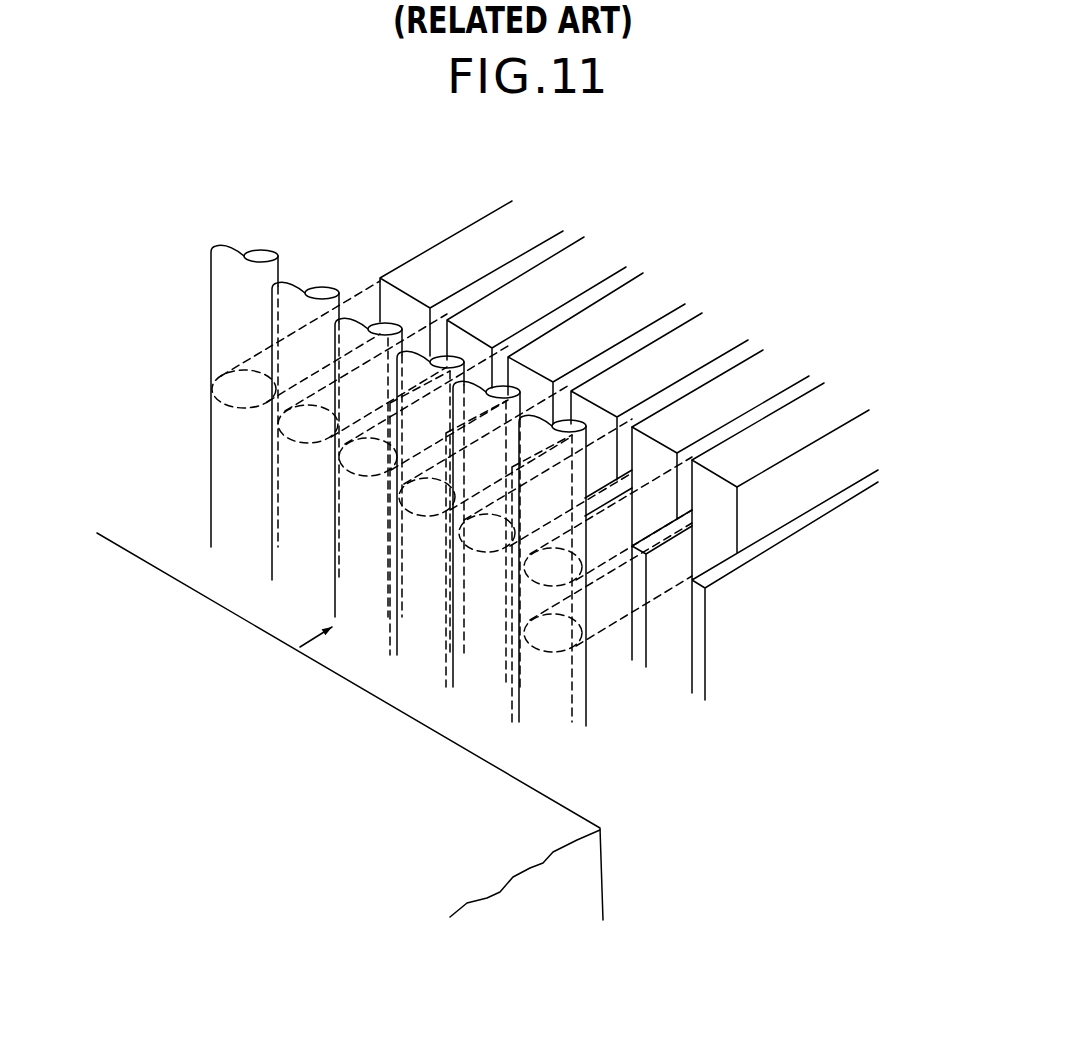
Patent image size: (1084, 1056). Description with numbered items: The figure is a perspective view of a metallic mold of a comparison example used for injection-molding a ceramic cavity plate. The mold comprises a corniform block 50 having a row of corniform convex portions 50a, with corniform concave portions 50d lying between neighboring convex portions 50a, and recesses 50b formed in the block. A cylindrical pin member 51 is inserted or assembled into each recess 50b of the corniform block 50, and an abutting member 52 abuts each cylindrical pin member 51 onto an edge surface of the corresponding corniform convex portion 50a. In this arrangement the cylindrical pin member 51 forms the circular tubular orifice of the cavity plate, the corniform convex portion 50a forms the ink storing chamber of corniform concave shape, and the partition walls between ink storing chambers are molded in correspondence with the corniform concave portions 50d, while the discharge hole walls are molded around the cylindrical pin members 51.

The corniform block 50 is at (651, 439).
The corniform convex portion 50a is at (737, 390).
The recess 50b is at (708, 553).
The corniform concave portion 50d is at (748, 345).
The cylindrical pin member 51 is at (580, 692).
The abutting member 52 is at (587, 868).